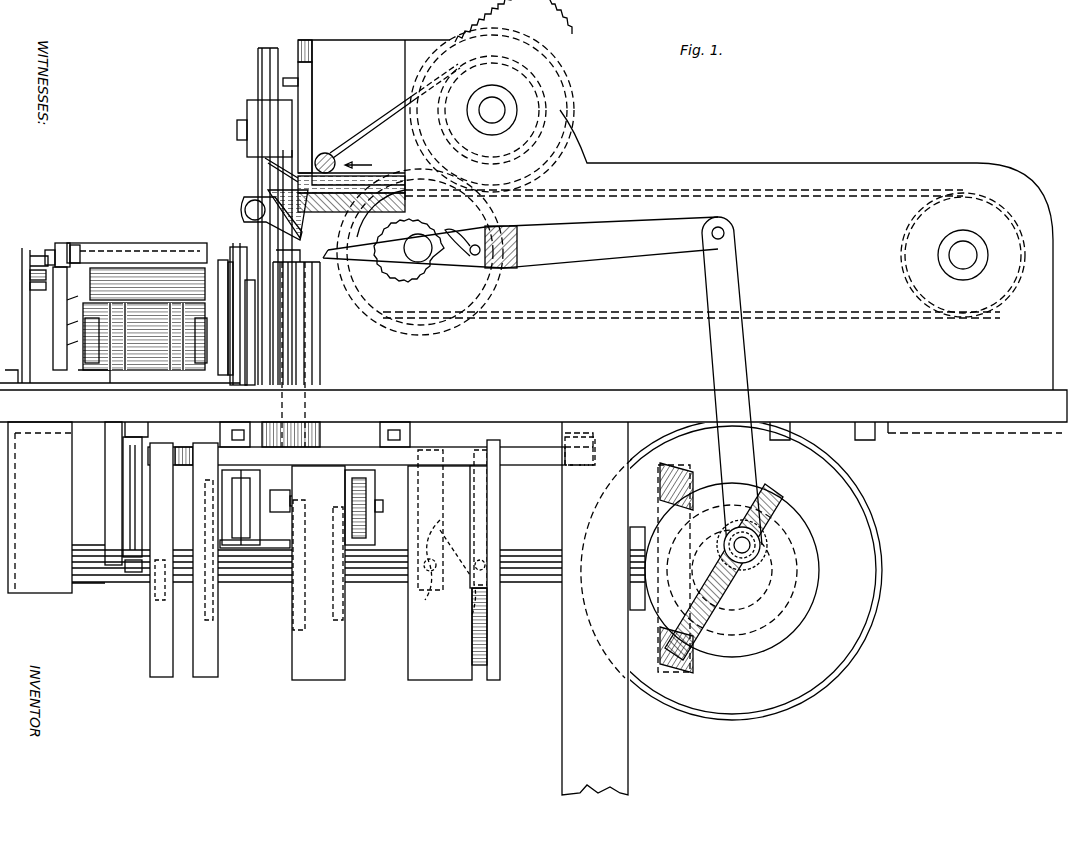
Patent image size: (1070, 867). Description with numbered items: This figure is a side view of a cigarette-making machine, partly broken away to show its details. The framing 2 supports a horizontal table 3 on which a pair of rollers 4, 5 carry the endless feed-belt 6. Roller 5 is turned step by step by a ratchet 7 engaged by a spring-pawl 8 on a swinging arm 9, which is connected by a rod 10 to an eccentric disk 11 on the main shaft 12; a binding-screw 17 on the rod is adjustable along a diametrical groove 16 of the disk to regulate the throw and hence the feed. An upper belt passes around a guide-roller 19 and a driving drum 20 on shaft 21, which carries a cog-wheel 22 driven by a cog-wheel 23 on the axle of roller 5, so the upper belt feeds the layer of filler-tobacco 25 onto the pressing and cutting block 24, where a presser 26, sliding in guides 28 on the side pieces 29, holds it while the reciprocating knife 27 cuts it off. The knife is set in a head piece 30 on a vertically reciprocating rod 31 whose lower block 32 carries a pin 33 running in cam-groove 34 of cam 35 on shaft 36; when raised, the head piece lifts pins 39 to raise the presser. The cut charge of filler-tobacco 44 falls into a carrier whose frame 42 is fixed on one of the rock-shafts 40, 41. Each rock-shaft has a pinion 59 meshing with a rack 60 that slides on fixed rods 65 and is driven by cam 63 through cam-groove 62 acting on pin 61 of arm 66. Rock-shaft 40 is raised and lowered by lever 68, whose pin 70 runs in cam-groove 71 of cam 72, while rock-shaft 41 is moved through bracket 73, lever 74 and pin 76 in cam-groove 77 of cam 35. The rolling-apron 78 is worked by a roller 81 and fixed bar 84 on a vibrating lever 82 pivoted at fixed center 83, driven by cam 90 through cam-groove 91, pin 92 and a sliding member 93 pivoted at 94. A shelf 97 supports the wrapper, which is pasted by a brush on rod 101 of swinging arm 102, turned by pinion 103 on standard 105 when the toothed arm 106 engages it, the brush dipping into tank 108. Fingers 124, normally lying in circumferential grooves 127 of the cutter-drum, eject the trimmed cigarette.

The framing 2 is at (510, 608).
The horizontal platform or table 3 is at (533, 415).
The roller 4 is at (900, 260).
The roller 5 is at (500, 270).
The endless feed-belt 6 is at (875, 320).
The ratchet 7 is at (406, 268).
The spring-pawl 8 is at (462, 251).
The swinging arm 9 is at (528, 242).
The connecting-rod 10 is at (745, 352).
The eccentric or disk 11 is at (795, 546).
The main shaft 12 is at (735, 575).
The groove 16 is at (364, 122).
The binding-screw 17 is at (760, 550).
The roller 19 is at (333, 158).
The driving drum or roller 20 is at (545, 88).
The shaft 21 is at (492, 112).
The cog-wheel 22 is at (512, 38).
The cog-wheel 23 is at (422, 330).
The pressing and cutting block 24 is at (395, 200).
The layer of filler-tobacco 25 is at (372, 178).
The presser 26 is at (310, 90).
The reciprocating knife 27 is at (265, 162).
The vertical grooves or guides 28 is at (305, 40).
The side pieces 29 is at (357, 48).
The head piece 30 is at (266, 112).
The vertically-reciprocating rod 31 is at (266, 48).
The block 32 is at (278, 503).
The pin 33 is at (288, 515).
The cam-groove 34 is at (296, 610).
The cam 35 is at (318, 573).
The shaft 36 is at (258, 576).
The pins 39 is at (283, 80).
The rock-shaft 40 is at (298, 182).
The rock-shaft 41 is at (300, 245).
The frame 42 is at (245, 212).
The charge of filler-tobacco 44 is at (270, 193).
The pinion 59 is at (322, 440).
The rack 60 is at (352, 447).
The pin 61 is at (490, 560).
The cam-groove 62 is at (482, 682).
The cam 63 is at (440, 573).
The fixed rods 65 is at (510, 434).
The fixed arm 66 is at (420, 515).
The lever 68 is at (228, 490).
The fixed pin 70 is at (207, 510).
The cam-groove 71 is at (216, 612).
The cam 72 is at (207, 678).
The bracket 73 is at (391, 522).
The lever 74 is at (355, 520).
The pin 76 is at (322, 508).
The cam-groove 77 is at (342, 598).
The rolling-apron 78 is at (95, 275).
The roller 81 is at (60, 285).
The vibrating lever 82 is at (55, 365).
The fixed center 83 is at (86, 548).
The fixed bar 84 is at (62, 245).
The cam 90 is at (150, 668).
The cam-groove 91 is at (150, 598).
The pin 92 is at (145, 575).
The horizontally-sliding frame or member 93 is at (140, 497).
The pivot 94 is at (150, 445).
The shelf or bridge-like support 97 is at (231, 262).
The rod 101 is at (78, 247).
The swinging arm 102 is at (50, 250).
The pinion 103 is at (30, 256).
The standard 105 is at (290, 318).
The swinging toothed arm 106 is at (30, 276).
The tank 108 is at (165, 238).
The fingers 124 is at (140, 392).
The circumferential grooves 127 is at (165, 350).